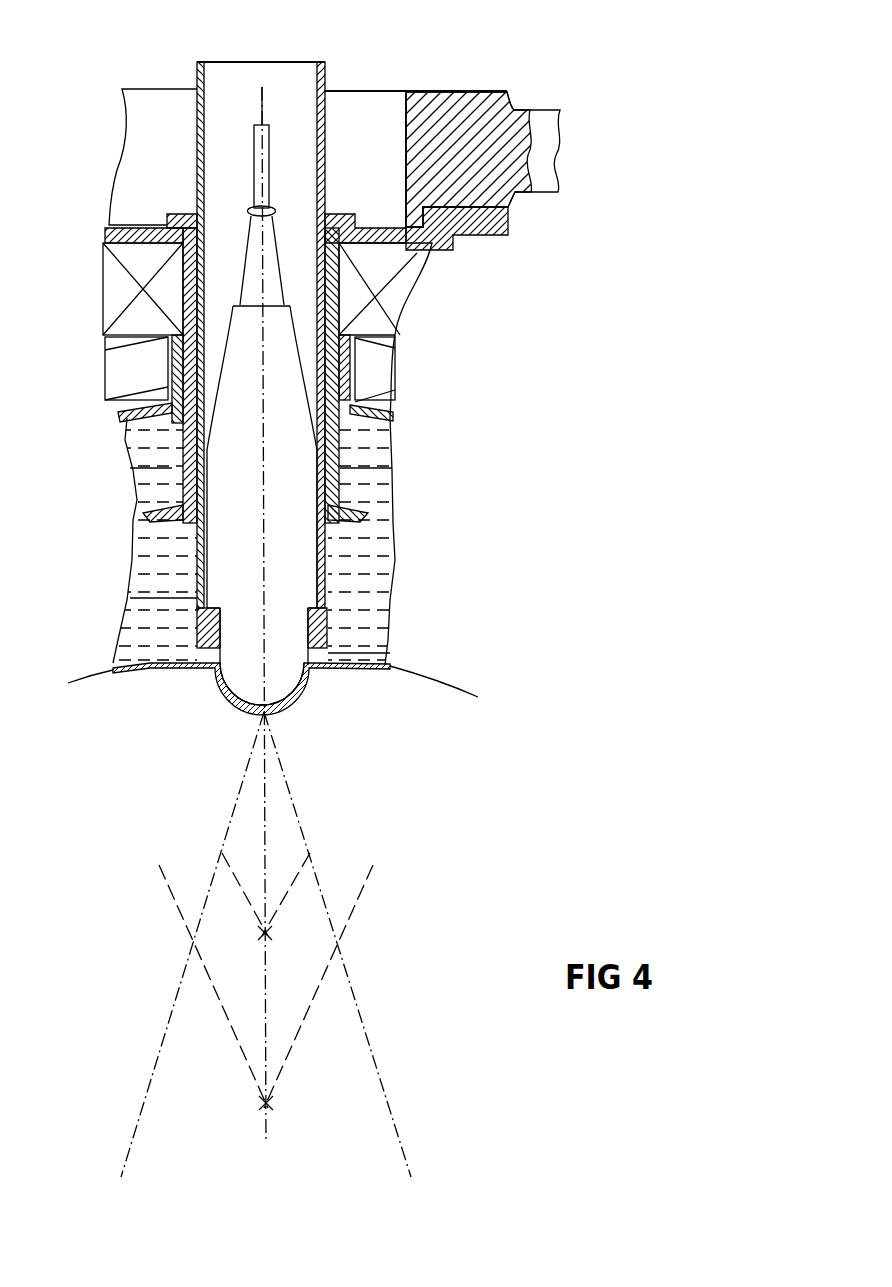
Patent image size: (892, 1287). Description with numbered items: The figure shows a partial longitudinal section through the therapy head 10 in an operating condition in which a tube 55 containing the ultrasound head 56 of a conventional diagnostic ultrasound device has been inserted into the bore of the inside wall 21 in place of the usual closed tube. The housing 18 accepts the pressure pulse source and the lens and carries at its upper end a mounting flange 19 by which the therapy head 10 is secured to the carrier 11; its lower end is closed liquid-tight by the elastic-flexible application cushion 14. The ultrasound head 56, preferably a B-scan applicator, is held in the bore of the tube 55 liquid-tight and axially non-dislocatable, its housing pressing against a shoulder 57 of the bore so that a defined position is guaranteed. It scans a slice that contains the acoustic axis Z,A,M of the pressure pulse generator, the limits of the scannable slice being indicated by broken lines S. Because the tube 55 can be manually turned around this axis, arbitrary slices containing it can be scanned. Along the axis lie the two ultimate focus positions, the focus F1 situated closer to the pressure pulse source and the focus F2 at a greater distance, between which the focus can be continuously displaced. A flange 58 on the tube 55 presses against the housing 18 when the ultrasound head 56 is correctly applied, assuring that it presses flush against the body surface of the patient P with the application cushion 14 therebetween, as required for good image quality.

The therapy head 10 is at (120, 232).
The carrier 11 is at (541, 118).
The application cushion 14 is at (358, 672).
The housing 18 is at (412, 262).
The mounting flange 19 is at (490, 228).
The inside wall 21 is at (335, 318).
The tube 55 is at (327, 87).
The ultrasound head 56 is at (299, 566).
The shoulder 57 is at (335, 628).
The flange 58 is at (347, 217).
The patient P is at (458, 683).
The limits of the scannable slice S is at (144, 1100).
The focus F1 is at (267, 934).
The focus F2 is at (268, 1104).
The acoustic axis / middle axis Z,A,M is at (268, 820).